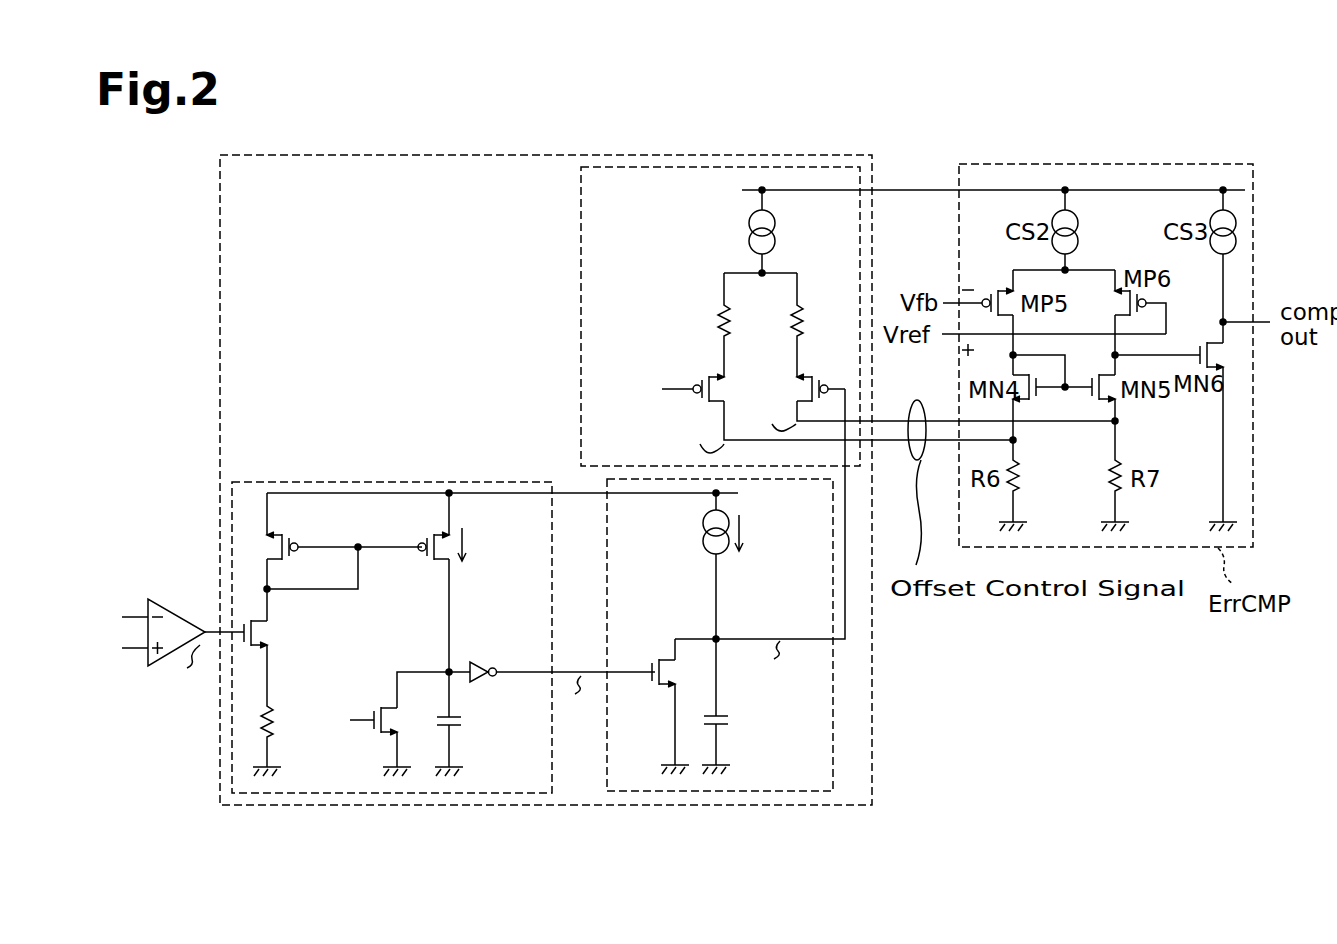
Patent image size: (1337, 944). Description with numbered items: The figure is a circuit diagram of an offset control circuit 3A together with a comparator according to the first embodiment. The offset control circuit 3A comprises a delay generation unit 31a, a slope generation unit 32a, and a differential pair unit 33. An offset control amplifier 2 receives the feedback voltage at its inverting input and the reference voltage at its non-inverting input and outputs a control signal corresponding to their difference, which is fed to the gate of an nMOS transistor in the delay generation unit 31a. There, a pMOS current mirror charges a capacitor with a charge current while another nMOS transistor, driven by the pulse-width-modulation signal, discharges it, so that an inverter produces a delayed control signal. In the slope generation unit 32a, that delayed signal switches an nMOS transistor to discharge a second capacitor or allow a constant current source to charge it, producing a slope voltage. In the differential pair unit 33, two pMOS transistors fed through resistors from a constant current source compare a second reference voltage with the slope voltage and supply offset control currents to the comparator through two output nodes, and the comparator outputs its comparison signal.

The offset control amplifier 2 is at (181, 609).
The offset control circuit 3A is at (218, 205).
The delay generation unit 31a is at (302, 480).
The slope generation unit 32a is at (833, 742).
The differential pair unit 33 is at (578, 206).